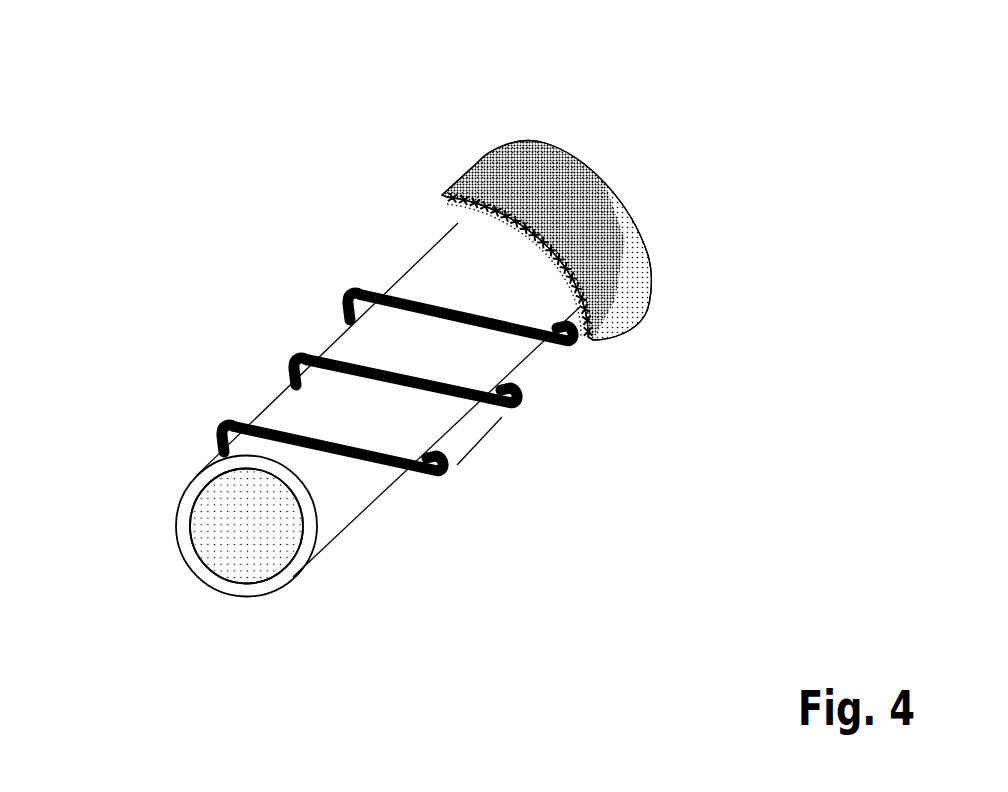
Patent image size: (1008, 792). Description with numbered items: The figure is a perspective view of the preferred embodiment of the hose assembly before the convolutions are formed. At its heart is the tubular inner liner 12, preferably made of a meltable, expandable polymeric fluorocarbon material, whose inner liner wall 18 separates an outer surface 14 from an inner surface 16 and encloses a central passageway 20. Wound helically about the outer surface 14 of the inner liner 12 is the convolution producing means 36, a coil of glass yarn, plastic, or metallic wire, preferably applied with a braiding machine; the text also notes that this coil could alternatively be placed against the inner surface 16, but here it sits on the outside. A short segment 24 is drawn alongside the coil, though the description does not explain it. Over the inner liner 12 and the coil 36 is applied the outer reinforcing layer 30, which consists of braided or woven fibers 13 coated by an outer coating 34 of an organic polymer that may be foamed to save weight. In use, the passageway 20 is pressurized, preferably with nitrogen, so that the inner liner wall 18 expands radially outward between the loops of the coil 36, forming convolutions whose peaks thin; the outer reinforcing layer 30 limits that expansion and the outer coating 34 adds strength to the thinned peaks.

The inner liner 12 is at (312, 407).
The braided or woven fibers 13 is at (445, 197).
The outer surface 14 is at (203, 513).
The inner surface 16 is at (185, 537).
The inner liner wall 18 is at (283, 580).
The passageway 20 is at (242, 515).
The wire segment 24 is at (480, 437).
The outer reinforcing layer 30 is at (515, 158).
The outer coating 34 is at (463, 208).
The convolution producing means 36 is at (342, 297).